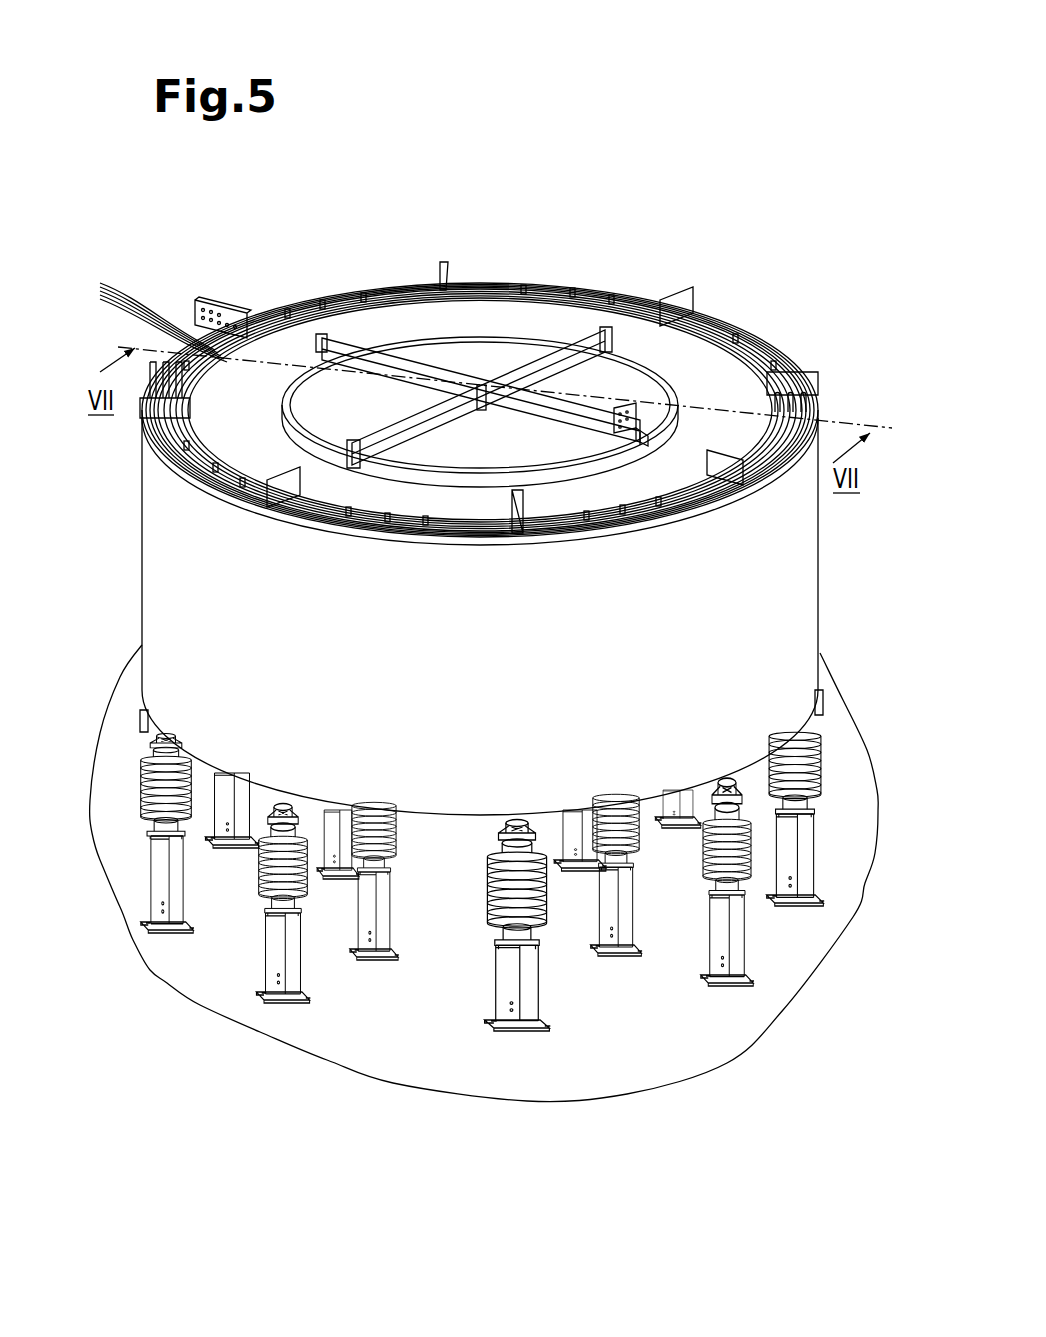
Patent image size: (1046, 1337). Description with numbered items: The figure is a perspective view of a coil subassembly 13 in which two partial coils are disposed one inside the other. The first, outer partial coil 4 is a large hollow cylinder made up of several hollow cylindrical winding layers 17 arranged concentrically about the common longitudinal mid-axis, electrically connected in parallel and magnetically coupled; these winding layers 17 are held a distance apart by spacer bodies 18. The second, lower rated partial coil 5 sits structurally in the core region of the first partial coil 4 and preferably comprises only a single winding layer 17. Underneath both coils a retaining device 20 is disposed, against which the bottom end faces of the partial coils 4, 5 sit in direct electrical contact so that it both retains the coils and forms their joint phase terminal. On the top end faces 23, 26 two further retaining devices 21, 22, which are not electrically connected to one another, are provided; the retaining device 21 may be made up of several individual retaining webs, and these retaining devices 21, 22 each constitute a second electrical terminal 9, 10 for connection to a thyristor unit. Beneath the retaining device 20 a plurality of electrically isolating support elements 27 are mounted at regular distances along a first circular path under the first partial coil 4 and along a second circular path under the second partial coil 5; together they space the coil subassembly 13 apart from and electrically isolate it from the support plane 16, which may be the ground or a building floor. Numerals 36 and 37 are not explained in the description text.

The first partial coil 4 is at (826, 545).
The second partial coil 5 is at (630, 345).
The second electrical terminal 9 is at (195, 295).
The second electrical terminal 10 is at (650, 418).
The coil subassembly 13 is at (740, 140).
The support plane 16 is at (337, 1030).
The winding layer 17 is at (390, 290).
The spacer body 18 is at (312, 290).
The retaining device 20 is at (136, 722).
The retaining device 21 is at (443, 265).
The retaining device 22 is at (485, 365).
The top end face 23 is at (410, 333).
The top end face 26 is at (650, 405).
The electrically isolating support element 27 is at (517, 1040).
The insulator 36 is at (540, 920).
The support post 37 is at (513, 993).